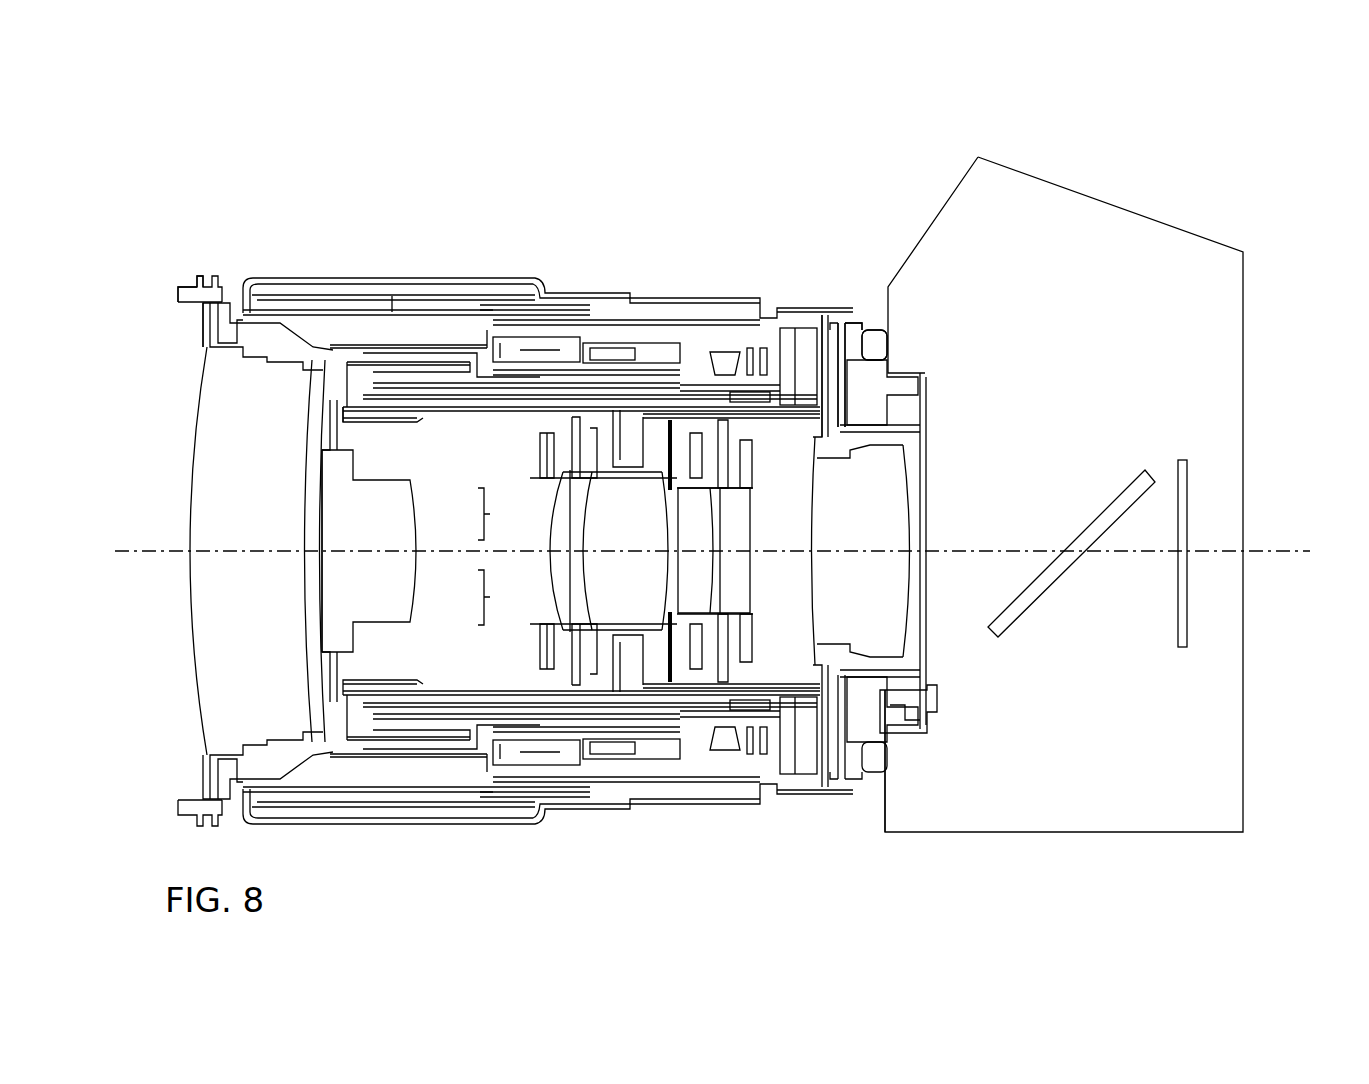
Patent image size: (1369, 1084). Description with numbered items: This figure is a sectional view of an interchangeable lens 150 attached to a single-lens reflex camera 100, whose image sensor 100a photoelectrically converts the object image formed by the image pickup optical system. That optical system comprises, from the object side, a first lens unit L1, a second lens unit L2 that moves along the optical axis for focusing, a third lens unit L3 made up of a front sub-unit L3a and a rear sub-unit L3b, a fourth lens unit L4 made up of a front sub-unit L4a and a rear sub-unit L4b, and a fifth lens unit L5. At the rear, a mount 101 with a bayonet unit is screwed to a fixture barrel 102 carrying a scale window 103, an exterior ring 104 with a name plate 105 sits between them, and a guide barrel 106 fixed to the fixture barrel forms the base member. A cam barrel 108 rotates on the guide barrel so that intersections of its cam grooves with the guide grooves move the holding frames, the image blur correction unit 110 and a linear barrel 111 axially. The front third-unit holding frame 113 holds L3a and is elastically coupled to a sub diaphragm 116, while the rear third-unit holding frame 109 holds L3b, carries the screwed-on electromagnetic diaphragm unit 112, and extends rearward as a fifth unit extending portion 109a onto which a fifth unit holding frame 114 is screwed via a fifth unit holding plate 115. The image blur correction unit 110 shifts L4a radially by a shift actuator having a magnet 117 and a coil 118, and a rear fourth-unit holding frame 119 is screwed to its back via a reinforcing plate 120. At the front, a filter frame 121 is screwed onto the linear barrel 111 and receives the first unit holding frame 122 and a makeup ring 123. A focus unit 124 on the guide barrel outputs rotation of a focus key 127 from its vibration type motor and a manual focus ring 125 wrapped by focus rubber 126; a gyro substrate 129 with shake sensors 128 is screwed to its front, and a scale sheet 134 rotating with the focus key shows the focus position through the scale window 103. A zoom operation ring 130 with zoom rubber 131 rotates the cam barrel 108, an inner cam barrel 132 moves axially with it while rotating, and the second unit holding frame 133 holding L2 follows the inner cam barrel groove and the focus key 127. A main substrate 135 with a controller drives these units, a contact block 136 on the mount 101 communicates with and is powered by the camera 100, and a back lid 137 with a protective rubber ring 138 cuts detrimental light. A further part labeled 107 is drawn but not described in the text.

The camera 100 is at (1082, 232).
The image sensor 100a is at (1180, 457).
The mount 101 is at (878, 760).
The fixture barrel 102 is at (795, 352).
The scale window 103 is at (572, 297).
The exterior ring 104 is at (807, 783).
The name plate 105 is at (833, 405).
The guide barrel 106 is at (738, 362).
The lens holder 107 is at (635, 690).
The cam barrel 108 is at (688, 402).
The 3b-th unit holding frame 109 is at (612, 675).
The fifth unit extending portion 109a is at (777, 345).
The image blur correction unit 110 is at (672, 630).
The linear barrel 111 is at (392, 296).
The electromagnetic diaphragm unit 112 is at (580, 660).
The 3a-th unit holding frame 113 is at (557, 653).
The fifth unit holding frame 114 is at (831, 675).
The fifth unit holding plate 115 is at (853, 317).
The sub diaphragm 116 is at (540, 640).
The magnet 117 is at (702, 673).
The coil 118 is at (682, 657).
The 4b-th unit holding frame 119 is at (743, 653).
The reinforcing plate 120 is at (775, 632).
The filter frame 121 is at (222, 285).
The first unit holding frame 122 is at (215, 313).
The makeup ring 123 is at (205, 327).
The focus unit 124 is at (718, 352).
The manual focus ring 125 is at (463, 292).
The focus rubber 126 is at (415, 293).
The focus key 127 is at (380, 293).
The shake sensor 128 is at (524, 300).
The gyro substrate 129 is at (547, 293).
The zoom operation ring 130 is at (667, 393).
The zoom rubber 131 is at (688, 330).
The inner cam barrel 132 is at (334, 432).
The second unit holding frame 133 is at (342, 442).
The scale sheet 134 is at (590, 313).
The main substrate 135 is at (875, 320).
The contact block 136 is at (907, 705).
The back lid 137 is at (920, 695).
The protective rubber ring 138 is at (918, 718).
The interchangeable lens 150 is at (488, 160).
The first lens unit L1 is at (212, 430).
The second lens unit L2 is at (392, 492).
The third lens unit L3 is at (549, 551).
The 3a-th lens unit L3a is at (563, 502).
The 3b-th lens unit L3b is at (602, 512).
The fourth lens unit L4 is at (596, 556).
The 4a-th lens unit L4a is at (690, 565).
The 4b-th lens unit L4b is at (735, 570).
The fifth lens unit L5 is at (850, 503).